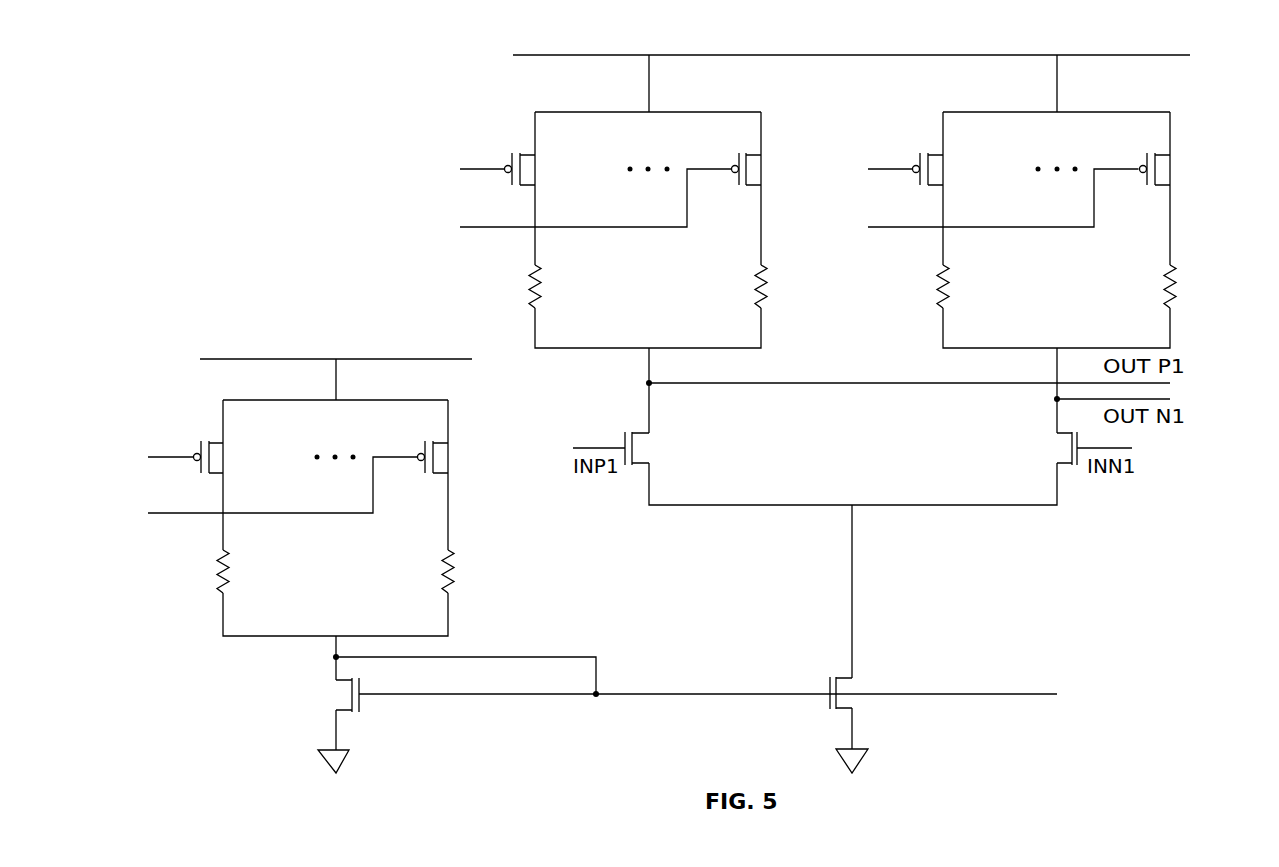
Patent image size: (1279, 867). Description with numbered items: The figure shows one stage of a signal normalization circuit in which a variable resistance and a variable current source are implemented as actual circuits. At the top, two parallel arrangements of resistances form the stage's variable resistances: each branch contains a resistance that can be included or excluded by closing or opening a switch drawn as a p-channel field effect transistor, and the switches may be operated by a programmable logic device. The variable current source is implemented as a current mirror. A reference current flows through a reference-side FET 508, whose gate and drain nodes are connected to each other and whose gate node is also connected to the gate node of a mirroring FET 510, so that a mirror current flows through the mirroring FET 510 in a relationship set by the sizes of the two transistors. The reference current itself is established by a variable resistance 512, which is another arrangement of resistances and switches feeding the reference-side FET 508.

The reference-side FET 508 is at (340, 693).
The mirroring FET 510 is at (829, 676).
The variable resistance 512 is at (247, 338).